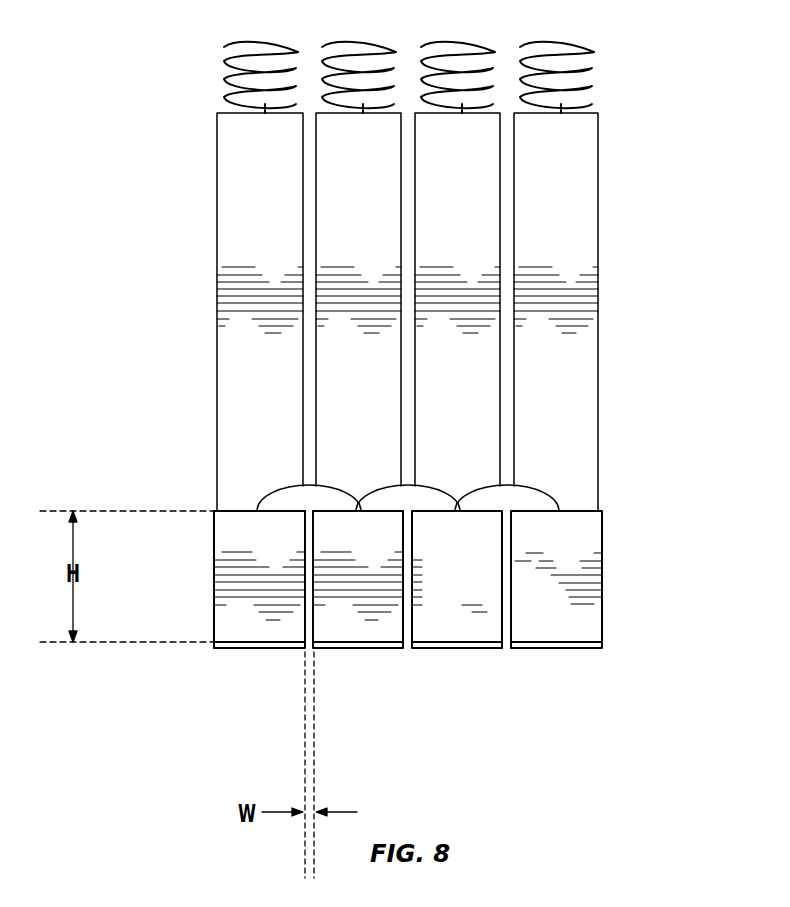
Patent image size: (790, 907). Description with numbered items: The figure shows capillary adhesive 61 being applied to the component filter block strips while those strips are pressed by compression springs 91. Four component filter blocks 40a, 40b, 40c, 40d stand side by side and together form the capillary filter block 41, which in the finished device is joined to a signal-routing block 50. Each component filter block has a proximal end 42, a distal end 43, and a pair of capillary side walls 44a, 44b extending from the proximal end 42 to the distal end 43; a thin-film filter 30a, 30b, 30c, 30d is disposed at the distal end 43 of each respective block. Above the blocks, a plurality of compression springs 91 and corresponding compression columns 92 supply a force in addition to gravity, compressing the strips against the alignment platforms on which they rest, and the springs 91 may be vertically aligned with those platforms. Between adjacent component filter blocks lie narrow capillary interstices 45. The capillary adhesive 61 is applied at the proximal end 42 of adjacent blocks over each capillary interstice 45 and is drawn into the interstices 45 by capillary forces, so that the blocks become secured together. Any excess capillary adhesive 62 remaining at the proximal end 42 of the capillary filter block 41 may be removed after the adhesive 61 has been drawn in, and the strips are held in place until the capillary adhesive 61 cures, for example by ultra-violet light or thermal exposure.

The compression spring 91 is at (226, 81).
The compression column 92 is at (218, 267).
The excess capillary adhesive 62 is at (557, 497).
The capillary filter block 41 is at (400, 592).
The component filter block 40a is at (579, 607).
The component filter block 40b is at (487, 586).
The component filter block 40c is at (358, 599).
The component filter block 40d is at (211, 609).
The thin-film filter 30a is at (560, 646).
The thin-film filter 30b is at (463, 648).
The thin-film filter 30c is at (323, 650).
The thin-film filter 30d is at (260, 645).
The proximal end 42 is at (231, 512).
The distal end 43 is at (382, 628).
The capillary side wall 44a is at (500, 583).
The capillary side wall 44b is at (519, 549).
The capillary interstice 45 is at (303, 522).
The signal-routing block 50 is at (233, 640).
The capillary adhesive 61 is at (505, 612).